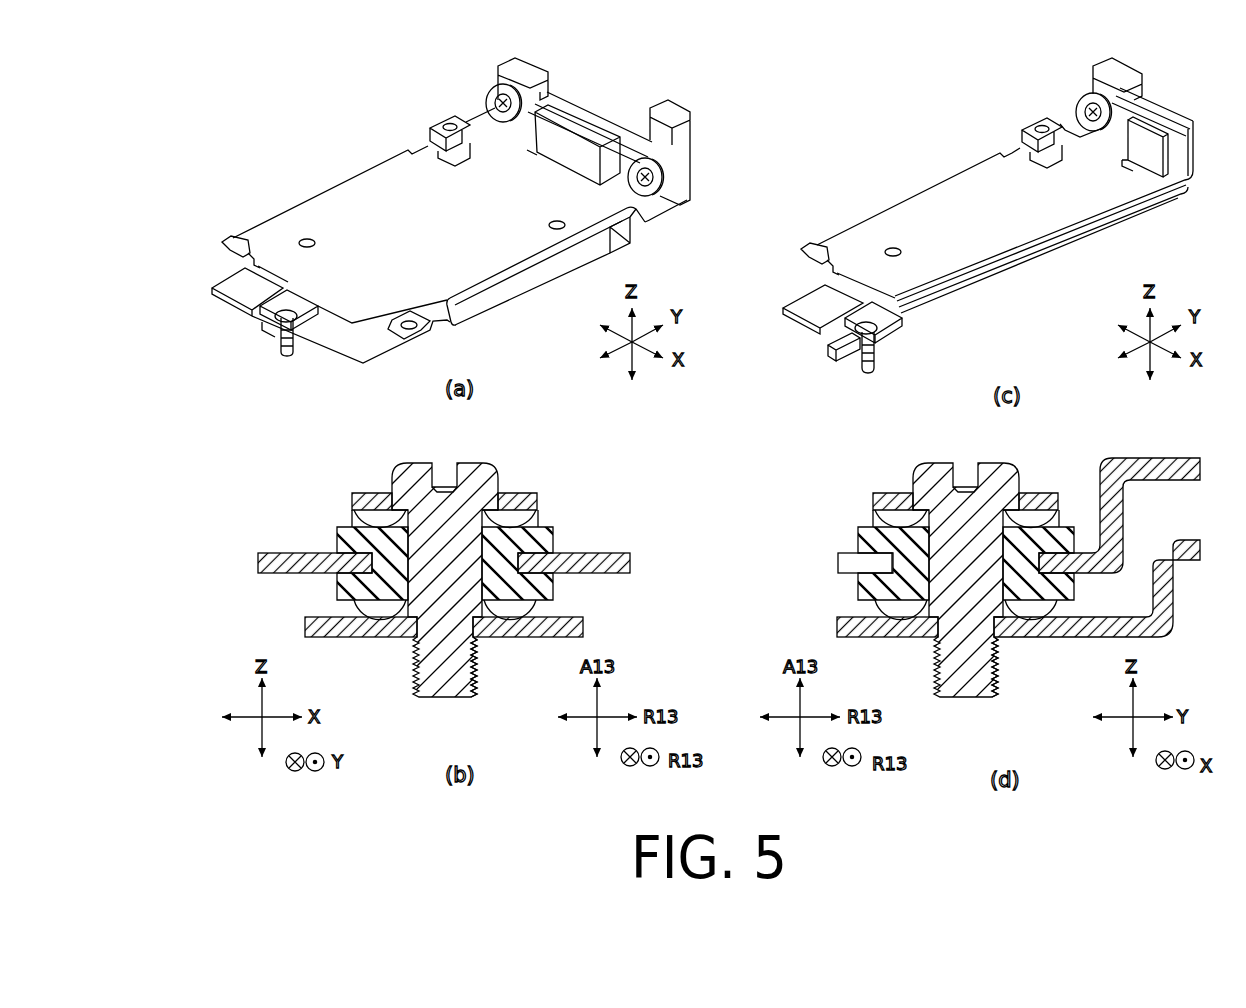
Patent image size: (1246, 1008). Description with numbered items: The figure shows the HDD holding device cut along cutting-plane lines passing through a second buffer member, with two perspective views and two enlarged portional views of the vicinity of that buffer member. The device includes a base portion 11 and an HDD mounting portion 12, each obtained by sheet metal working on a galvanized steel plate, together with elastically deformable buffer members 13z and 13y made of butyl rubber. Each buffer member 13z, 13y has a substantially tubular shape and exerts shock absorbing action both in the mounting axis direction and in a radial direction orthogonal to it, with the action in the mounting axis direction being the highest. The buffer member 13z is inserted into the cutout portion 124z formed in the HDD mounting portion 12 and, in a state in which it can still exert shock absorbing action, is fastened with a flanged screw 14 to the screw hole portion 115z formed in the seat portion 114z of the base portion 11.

The base portion 11 is at (383, 342).
The HDD mounting portion 12 is at (352, 192).
The buffer member 13y is at (550, 100).
The buffer member 13z is at (268, 333).
The flanged screw 14 is at (485, 96).
The seat portion 114z is at (355, 634).
The screw hole portion 115z is at (487, 640).
The cutout portion 124z is at (278, 558).